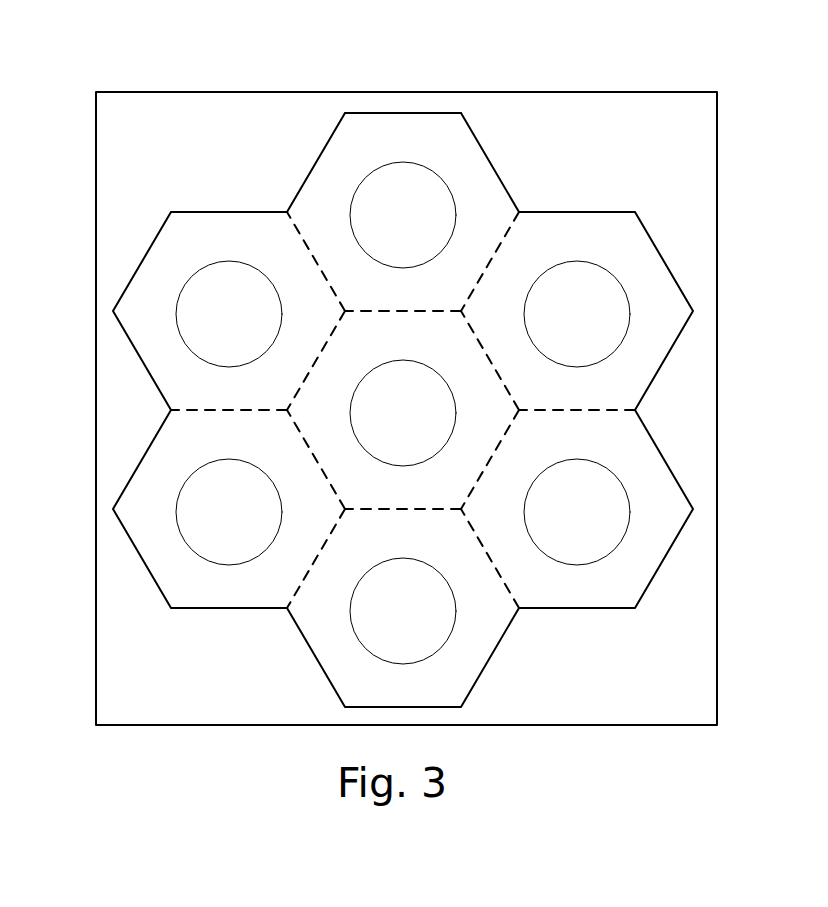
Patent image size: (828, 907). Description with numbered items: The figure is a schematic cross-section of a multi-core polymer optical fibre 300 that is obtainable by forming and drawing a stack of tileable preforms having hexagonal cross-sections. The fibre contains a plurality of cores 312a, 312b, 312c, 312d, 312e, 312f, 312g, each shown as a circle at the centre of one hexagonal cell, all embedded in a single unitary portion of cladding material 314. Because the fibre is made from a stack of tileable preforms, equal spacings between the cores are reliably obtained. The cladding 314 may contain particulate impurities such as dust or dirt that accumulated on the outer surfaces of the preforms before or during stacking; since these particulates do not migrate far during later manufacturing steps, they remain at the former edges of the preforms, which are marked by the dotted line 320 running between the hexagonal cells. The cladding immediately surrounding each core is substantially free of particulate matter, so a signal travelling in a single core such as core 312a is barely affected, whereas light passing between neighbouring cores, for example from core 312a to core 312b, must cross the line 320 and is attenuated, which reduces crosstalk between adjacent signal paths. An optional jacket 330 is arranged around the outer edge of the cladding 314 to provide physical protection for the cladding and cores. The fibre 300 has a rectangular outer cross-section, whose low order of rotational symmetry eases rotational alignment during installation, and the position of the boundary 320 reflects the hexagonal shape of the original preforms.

The multi-core polymer optical fibre 300 is at (202, 75).
The jacket 330 is at (96, 248).
The cladding material 314 is at (381, 147).
The dotted line marking former preform edges 320 is at (422, 311).
The core 312a is at (383, 227).
The core 312b is at (556, 328).
The core 312c is at (557, 526).
The core 312d is at (382, 624).
The core 312e is at (208, 526).
The core 312f is at (208, 328).
The core 312g is at (384, 425).